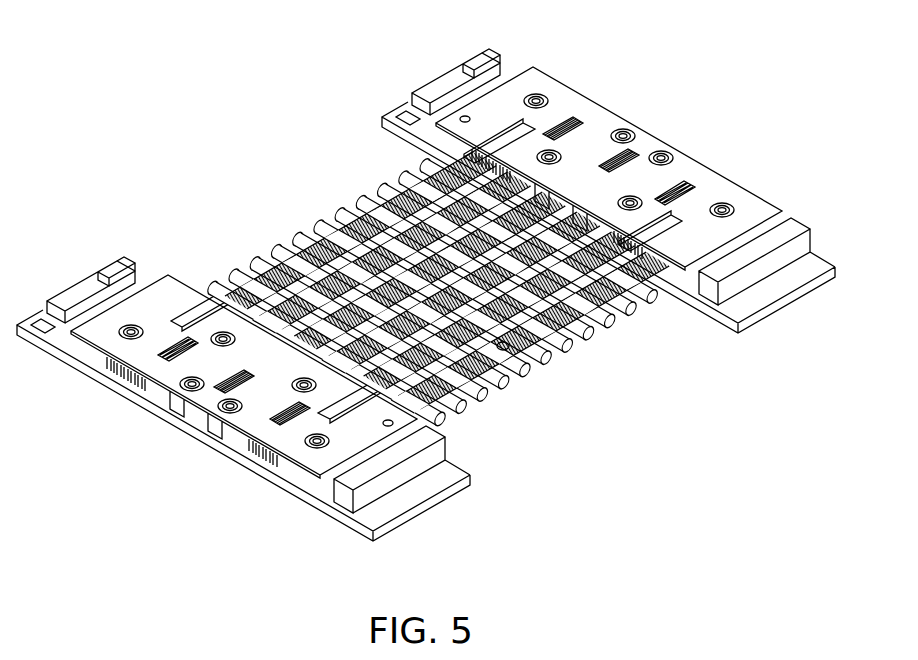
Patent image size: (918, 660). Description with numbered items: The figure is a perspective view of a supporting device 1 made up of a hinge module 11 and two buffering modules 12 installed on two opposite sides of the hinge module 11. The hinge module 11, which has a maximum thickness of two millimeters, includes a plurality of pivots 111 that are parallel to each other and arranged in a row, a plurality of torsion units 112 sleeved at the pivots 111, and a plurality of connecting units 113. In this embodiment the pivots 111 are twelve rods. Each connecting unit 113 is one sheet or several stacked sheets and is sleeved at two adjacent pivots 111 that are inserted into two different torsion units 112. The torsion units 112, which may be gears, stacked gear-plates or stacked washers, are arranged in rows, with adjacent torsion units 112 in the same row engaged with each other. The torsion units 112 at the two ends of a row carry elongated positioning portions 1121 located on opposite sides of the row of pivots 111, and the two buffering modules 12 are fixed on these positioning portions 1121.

The supporting device 1 is at (426, 277).
The hinge module 11 is at (438, 304).
The pivots 111 is at (557, 345).
The torsion units 112 is at (437, 340).
The positioning portions 1121 is at (667, 183).
The connecting units 113 is at (503, 348).
The buffering modules 12 is at (423, 92).